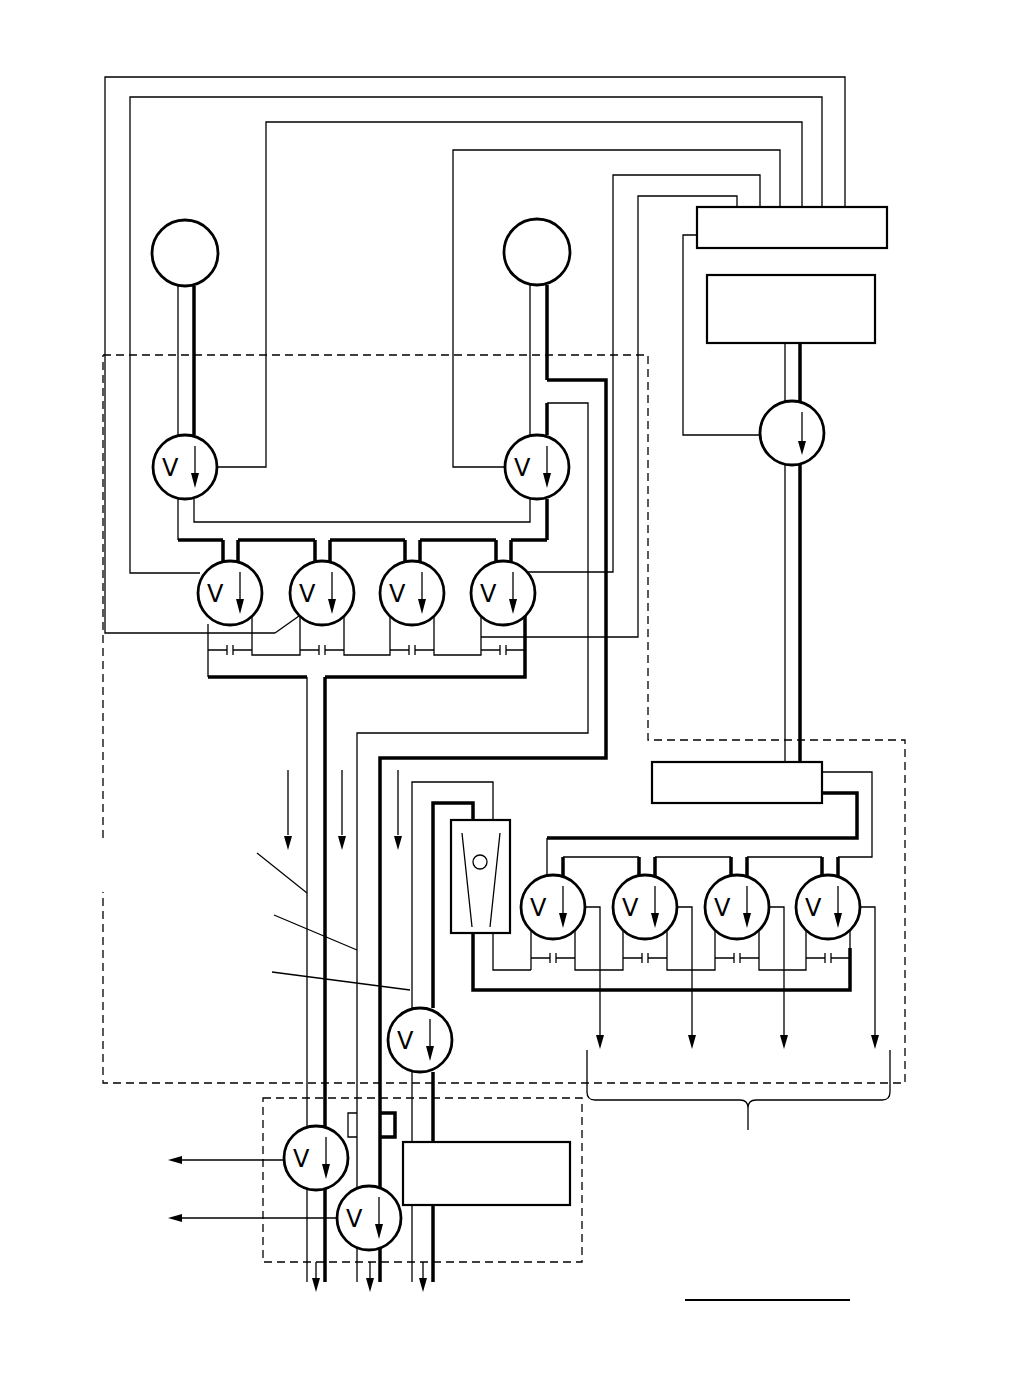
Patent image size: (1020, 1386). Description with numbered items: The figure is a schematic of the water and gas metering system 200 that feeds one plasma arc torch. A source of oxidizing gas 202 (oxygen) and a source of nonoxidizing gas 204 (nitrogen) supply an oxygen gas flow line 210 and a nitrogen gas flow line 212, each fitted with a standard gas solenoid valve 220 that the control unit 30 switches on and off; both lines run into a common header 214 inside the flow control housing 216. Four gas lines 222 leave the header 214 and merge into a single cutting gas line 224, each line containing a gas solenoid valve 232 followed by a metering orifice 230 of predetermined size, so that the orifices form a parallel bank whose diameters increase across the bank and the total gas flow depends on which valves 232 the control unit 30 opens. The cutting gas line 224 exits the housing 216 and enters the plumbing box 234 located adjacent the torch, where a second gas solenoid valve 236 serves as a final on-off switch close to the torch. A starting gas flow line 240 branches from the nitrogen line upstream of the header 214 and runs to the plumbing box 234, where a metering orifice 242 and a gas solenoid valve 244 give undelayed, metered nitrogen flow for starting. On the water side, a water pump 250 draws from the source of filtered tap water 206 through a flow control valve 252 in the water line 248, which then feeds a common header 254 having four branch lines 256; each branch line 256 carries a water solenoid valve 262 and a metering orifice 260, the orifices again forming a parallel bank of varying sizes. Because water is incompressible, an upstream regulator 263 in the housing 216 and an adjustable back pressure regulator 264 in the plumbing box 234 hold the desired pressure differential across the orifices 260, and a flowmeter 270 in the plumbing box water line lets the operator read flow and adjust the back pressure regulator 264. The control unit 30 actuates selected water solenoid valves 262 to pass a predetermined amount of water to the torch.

The water and gas metering system 200 is at (482, 60).
The control unit 30 is at (859, 207).
The source of oxidizing gas 202 is at (166, 223).
The source of nonoxidizing gas 204 is at (521, 222).
The source of filtered tap water 206 is at (845, 345).
The oxygen gas flow line 210 is at (196, 322).
The nitrogen gas flow line 212 is at (530, 318).
The common header 214 is at (353, 530).
The flow control housing 216 is at (375, 355).
The gas solenoid valve 220 is at (201, 440).
The gas lines 222 is at (236, 549).
The cutting gas line 224 is at (305, 748).
The metering orifice 230 is at (495, 658).
The gas solenoid valves 232 is at (203, 606).
The plumbing box 234 is at (263, 1246).
The second gas solenoid valve 236 is at (291, 1136).
The starting gas flow line 240 is at (490, 738).
The metering orifice 242 is at (327, 1088).
The gas solenoid valve 244 is at (398, 1240).
The water line 248 is at (798, 555).
The water pump 250 is at (826, 441).
The flow control valve 252 is at (443, 1063).
The common header 254 is at (593, 846).
The branch lines 256 is at (553, 868).
The metering orifice 260 is at (545, 967).
The water solenoid valve 262 is at (580, 873).
The upstream regulator 263 is at (729, 762).
The adjustable back pressure regulator 264 is at (515, 1205).
The flowmeter 270 is at (507, 818).